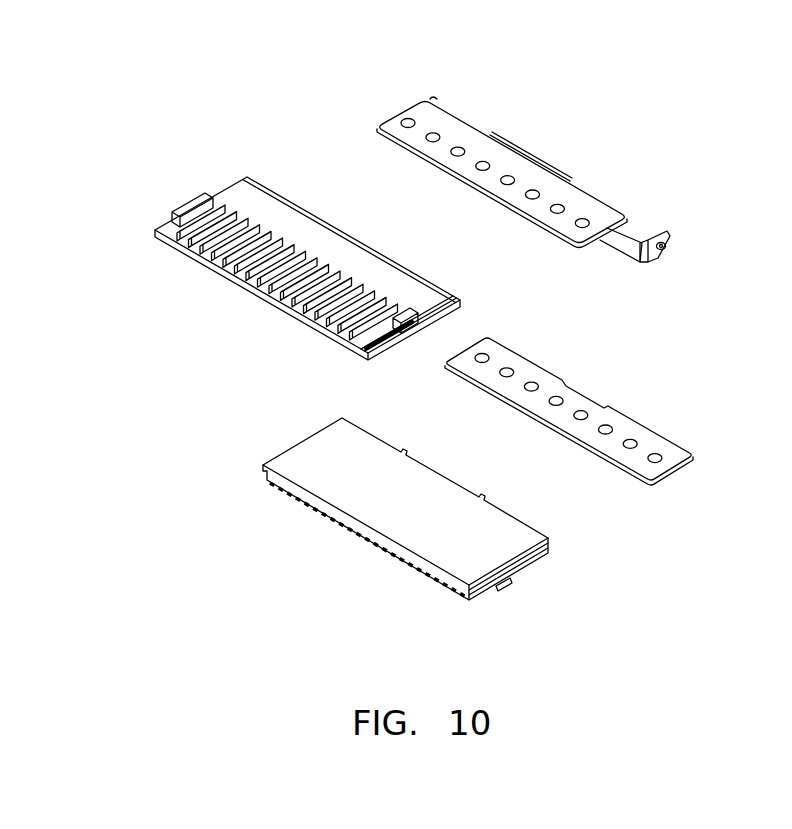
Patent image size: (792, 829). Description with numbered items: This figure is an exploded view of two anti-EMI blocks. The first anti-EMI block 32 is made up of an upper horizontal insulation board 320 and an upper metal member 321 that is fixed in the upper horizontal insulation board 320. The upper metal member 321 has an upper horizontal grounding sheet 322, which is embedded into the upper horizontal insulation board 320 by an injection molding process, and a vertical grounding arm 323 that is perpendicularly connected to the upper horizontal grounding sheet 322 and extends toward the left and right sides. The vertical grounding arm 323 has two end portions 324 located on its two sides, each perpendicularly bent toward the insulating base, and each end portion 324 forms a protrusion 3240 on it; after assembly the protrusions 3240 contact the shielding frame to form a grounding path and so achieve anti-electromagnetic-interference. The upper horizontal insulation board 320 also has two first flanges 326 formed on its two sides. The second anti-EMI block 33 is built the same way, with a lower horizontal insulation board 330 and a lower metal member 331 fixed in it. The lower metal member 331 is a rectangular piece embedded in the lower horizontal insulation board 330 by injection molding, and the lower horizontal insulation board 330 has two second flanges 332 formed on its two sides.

The first anti-EMI block 32 is at (286, 54).
The upper horizontal insulation board 320 is at (163, 216).
The upper metal member 321 is at (385, 116).
The upper horizontal grounding sheet 322 is at (452, 128).
The vertical grounding arm 323 is at (620, 240).
The end portion 324 is at (655, 260).
The protrusion 3240 is at (668, 241).
The first flange 326 is at (224, 187).
The second anti-EMI block 33 is at (556, 639).
The lower horizontal insulation board 330 is at (352, 522).
The lower metal member 331 is at (622, 421).
The second flange 332 is at (262, 470).